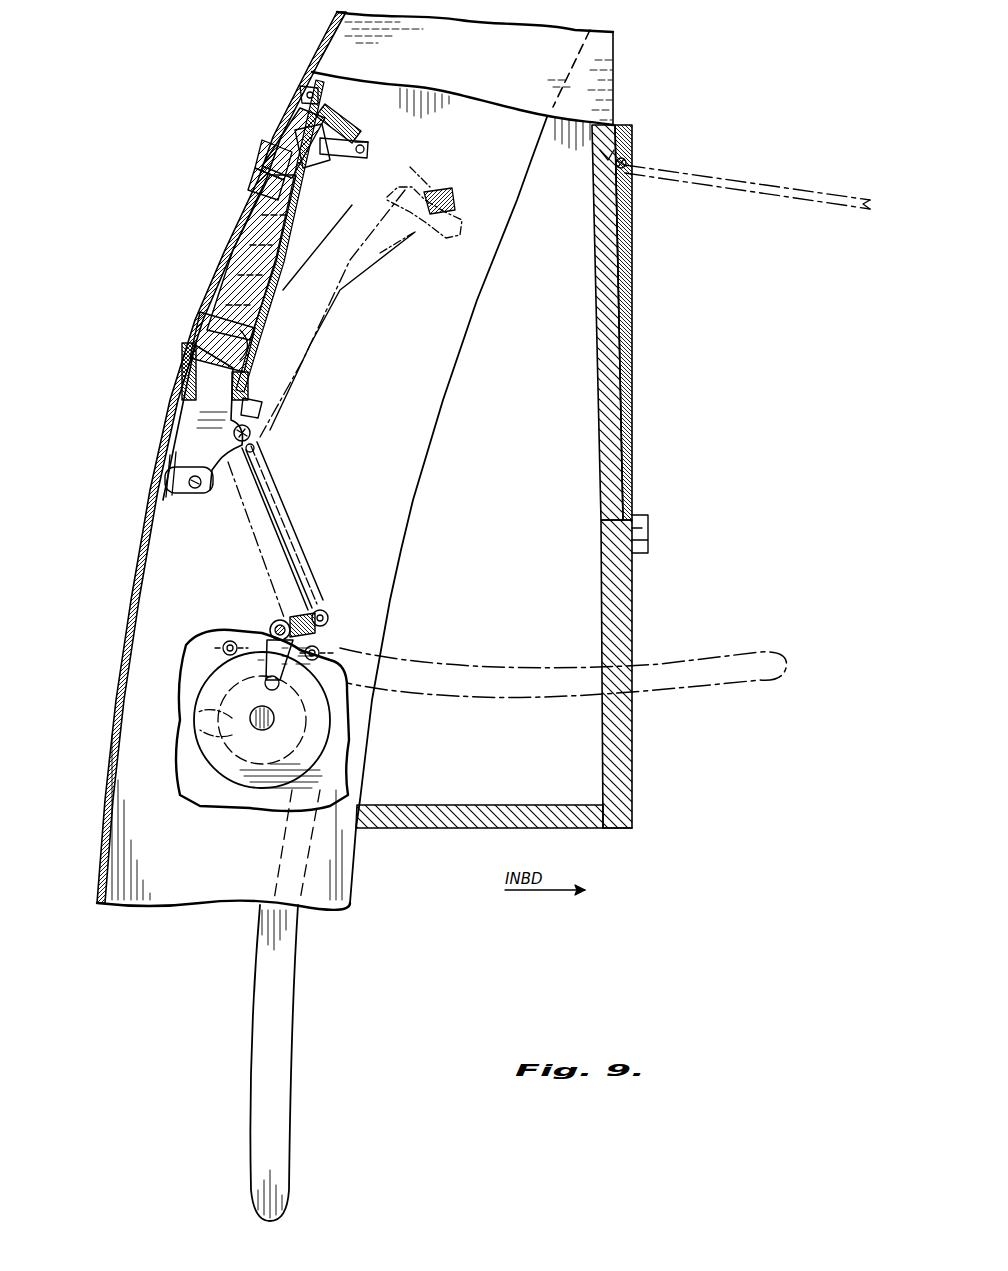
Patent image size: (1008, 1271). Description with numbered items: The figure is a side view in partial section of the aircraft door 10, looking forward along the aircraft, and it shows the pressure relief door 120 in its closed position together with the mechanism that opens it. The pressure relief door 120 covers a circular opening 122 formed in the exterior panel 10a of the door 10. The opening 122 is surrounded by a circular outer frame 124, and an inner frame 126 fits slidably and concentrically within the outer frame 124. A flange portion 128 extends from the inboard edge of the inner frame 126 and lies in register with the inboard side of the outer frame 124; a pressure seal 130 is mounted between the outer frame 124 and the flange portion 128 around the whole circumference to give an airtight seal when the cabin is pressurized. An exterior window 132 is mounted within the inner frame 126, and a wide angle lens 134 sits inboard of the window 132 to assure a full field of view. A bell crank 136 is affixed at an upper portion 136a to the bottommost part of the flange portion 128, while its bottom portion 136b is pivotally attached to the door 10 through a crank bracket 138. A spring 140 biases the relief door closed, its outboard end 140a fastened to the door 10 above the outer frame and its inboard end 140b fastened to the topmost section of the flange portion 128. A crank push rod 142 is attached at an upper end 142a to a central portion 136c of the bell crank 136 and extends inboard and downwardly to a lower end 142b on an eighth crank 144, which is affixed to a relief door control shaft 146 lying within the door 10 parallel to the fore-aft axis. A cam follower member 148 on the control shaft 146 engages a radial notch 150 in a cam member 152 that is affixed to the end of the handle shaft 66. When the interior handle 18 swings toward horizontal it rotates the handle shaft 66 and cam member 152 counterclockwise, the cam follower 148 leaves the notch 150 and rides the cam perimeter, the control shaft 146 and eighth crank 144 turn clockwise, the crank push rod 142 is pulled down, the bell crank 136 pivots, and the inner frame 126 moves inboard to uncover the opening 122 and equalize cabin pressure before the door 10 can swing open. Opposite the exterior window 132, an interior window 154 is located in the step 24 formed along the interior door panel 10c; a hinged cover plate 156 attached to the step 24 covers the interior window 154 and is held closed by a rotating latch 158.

The door 10 is at (150, 875).
The exterior panel 10a is at (190, 457).
The interior door panel 10c is at (420, 470).
The interior handle 18 is at (272, 1038).
The steps 24 is at (634, 613).
The handle shaft 66 is at (262, 724).
The pressure relief door 120 is at (205, 290).
The opening 122 is at (273, 152).
The outer frame 124 is at (277, 130).
The inner frame 126 is at (247, 175).
The flange portion 128 is at (313, 175).
The pressure seal 130 is at (330, 120).
The exterior window 132 is at (233, 248).
The wide angle lens 134 is at (283, 242).
The bell crank 136 is at (217, 427).
The upper portion 136a is at (253, 407).
The bottom portion 136b is at (193, 495).
The central portion 136c is at (250, 432).
The crank bracket 138 is at (173, 497).
The spring 140 is at (357, 128).
The outboard end 140a is at (333, 80).
The inboard end 140b is at (368, 147).
The crank push rod 142 is at (293, 523).
The upper end 142a is at (256, 452).
The lower end 142b is at (326, 608).
The eighth crank 144 is at (287, 613).
The relief door control shaft 146 is at (268, 623).
The cam follower member 148 is at (347, 637).
The radial notch 150 is at (266, 670).
The cam member 152 is at (222, 745).
The interior window 154 is at (600, 415).
The hinged cover plate 156 is at (625, 345).
The rotating latch 158 is at (650, 527).